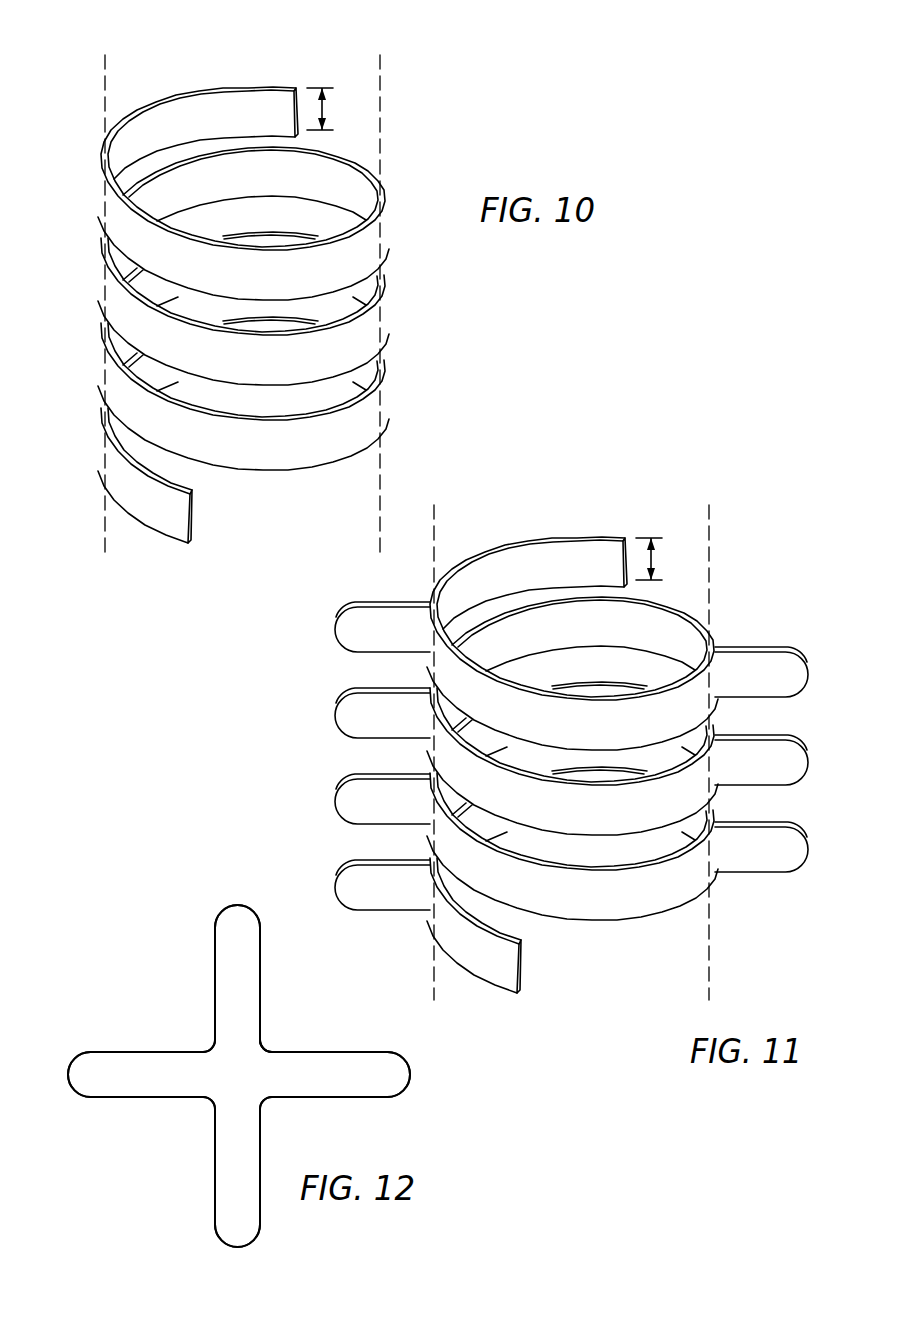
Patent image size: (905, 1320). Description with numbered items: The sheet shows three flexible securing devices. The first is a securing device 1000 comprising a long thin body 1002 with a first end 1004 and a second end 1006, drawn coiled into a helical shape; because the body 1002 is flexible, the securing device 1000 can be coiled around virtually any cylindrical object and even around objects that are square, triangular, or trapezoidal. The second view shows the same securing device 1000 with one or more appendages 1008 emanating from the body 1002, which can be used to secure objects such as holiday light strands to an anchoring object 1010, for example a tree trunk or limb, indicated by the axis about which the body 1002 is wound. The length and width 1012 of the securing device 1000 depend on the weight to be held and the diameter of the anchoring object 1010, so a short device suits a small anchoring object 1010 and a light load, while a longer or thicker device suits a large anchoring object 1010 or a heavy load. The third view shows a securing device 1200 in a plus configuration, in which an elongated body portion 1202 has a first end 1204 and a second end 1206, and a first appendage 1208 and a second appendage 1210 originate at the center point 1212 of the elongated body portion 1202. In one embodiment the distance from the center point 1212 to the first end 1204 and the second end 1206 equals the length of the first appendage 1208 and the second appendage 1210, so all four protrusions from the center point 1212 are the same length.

In FIG. 10, the securing device 1000 is at (409, 158).
In FIG. 10, the body 1002 is at (372, 304).
In FIG. 11, the body 1002 is at (693, 786).
In FIG. 10, the first end 1004 is at (250, 97).
In FIG. 11, the first end 1004 is at (579, 547).
In FIG. 10, the second end 1006 is at (177, 522).
In FIG. 11, the second end 1006 is at (502, 977).
In FIG. 11, the appendages 1008 is at (742, 667).
In FIG. 10, the anchoring object 1010 is at (360, 482).
In FIG. 11, the anchoring object 1010 is at (698, 592).
In FIG. 10, the width 1012 is at (324, 108).
In FIG. 11, the width 1012 is at (653, 558).
In FIG. 12, the securing device 1200 is at (177, 913).
In FIG. 12, the elongated body portion 1202 is at (250, 1065).
In FIG. 12, the first end 1204 is at (85, 1068).
In FIG. 12, the second end 1206 is at (388, 1077).
In FIG. 12, the first appendage 1208 is at (235, 955).
In FIG. 12, the second appendage 1210 is at (240, 1227).
In FIG. 12, the center point 1212 is at (238, 1077).